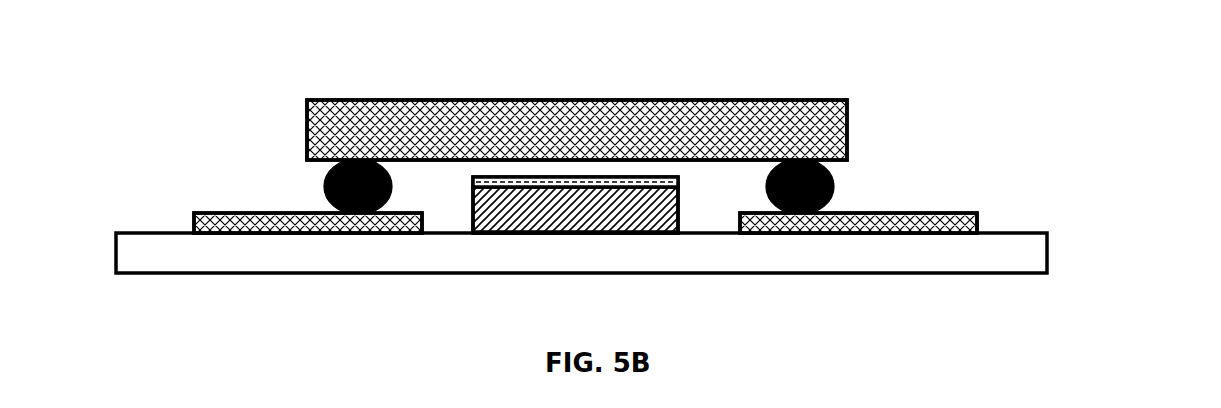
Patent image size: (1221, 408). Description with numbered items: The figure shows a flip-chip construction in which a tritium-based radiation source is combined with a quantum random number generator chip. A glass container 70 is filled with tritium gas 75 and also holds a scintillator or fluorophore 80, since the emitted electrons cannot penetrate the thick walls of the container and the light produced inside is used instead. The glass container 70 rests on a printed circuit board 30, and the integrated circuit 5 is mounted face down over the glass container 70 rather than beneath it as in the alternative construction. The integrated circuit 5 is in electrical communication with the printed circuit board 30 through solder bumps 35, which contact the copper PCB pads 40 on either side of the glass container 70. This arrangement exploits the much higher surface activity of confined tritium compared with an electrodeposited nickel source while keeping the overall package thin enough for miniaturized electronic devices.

The integrated circuit 5 is at (307, 129).
The printed circuit board 30 is at (1047, 253).
The solder bumps 35 is at (833, 177).
The PCB pads 40 is at (980, 213).
The glass container 70 is at (473, 231).
The tritium gas 75 is at (582, 215).
The scintillator or fluorophore 80 is at (513, 187).